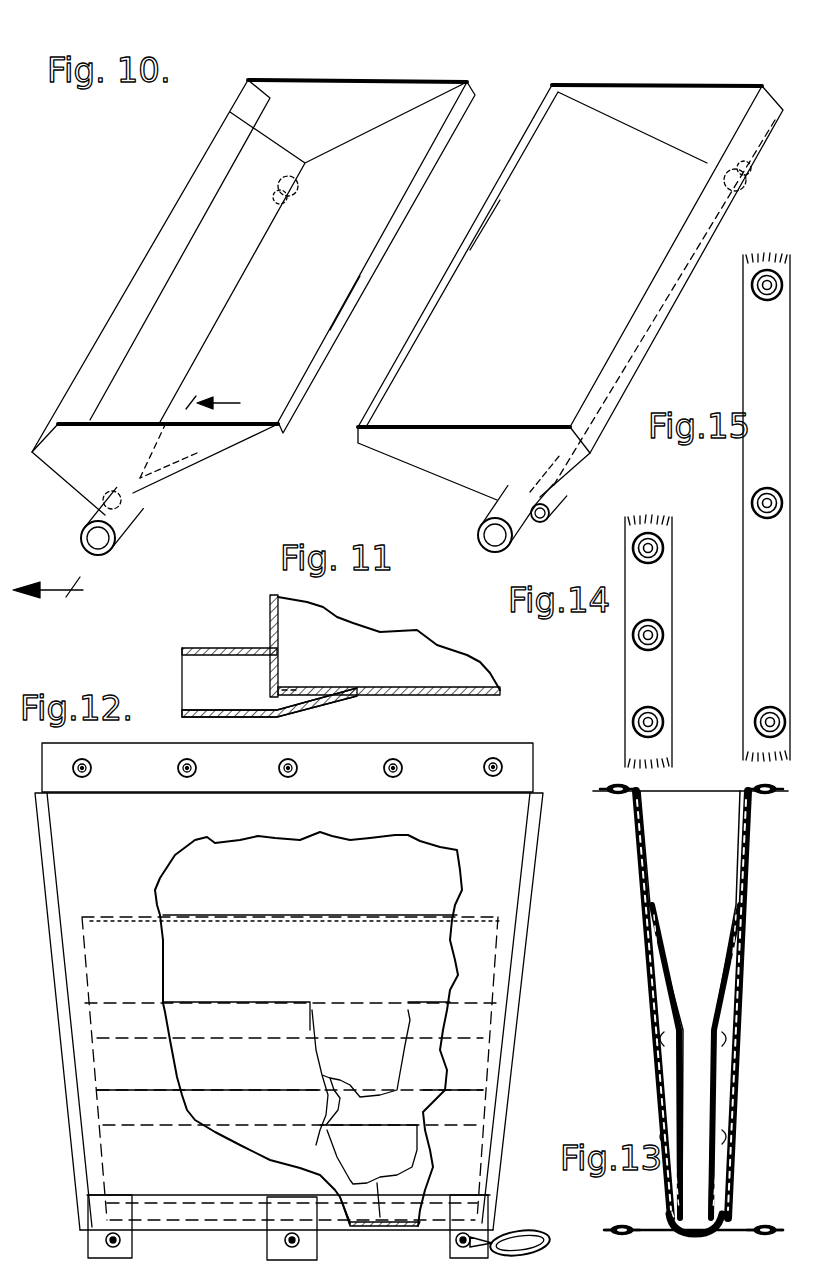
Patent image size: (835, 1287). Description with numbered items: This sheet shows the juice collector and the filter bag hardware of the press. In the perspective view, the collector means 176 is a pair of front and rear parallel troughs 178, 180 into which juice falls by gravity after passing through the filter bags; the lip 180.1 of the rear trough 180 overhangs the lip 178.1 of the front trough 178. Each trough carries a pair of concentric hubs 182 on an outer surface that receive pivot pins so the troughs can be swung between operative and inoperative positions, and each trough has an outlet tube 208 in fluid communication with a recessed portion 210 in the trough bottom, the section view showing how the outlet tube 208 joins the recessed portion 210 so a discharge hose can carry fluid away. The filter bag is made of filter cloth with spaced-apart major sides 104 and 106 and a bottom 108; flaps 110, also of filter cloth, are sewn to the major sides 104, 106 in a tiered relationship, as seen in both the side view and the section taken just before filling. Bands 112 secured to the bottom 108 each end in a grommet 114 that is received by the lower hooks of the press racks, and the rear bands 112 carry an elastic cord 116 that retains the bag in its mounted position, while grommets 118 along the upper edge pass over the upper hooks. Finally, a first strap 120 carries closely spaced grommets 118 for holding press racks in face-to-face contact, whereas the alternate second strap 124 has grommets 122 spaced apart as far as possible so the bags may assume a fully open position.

In FIG. 12, the major side 104 is at (132, 881).
In FIG. 13, the major side 104 is at (749, 868).
In FIG. 12, the major side 106 is at (282, 881).
In FIG. 13, the major side 106 is at (632, 868).
In FIG. 12, the bottom 108 is at (382, 1176).
In FIG. 13, the bottom 108 is at (690, 1236).
In FIG. 12, the flaps 110 is at (332, 1077).
In FIG. 13, the flaps 110 is at (658, 1106).
In FIG. 12, the bands 112 is at (265, 1248).
In FIG. 13, the bands 112 is at (648, 1228).
In FIG. 12, the grommet 114 is at (104, 1243).
In FIG. 13, the grommet 114 is at (620, 1240).
In FIG. 12, the elastic cord 116 is at (545, 1210).
In FIG. 12, the grommets 118 is at (174, 768).
In FIG. 13, the grommets 118 is at (618, 800).
In FIG. 14, the grommets 118 is at (663, 552).
In FIG. 14, the strap 120 is at (625, 670).
In FIG. 15, the grommets 122 is at (785, 284).
In FIG. 15, the second strap 124 is at (745, 366).
In FIG. 10, the collector means 176 is at (613, 64).
In FIG. 10, the front trough 178 is at (708, 80).
In FIG. 10, the lip 178.1 is at (478, 236).
In FIG. 10, the rear trough 180 is at (354, 80).
In FIG. 11, the rear trough 180 is at (356, 627).
In FIG. 10, the lip 180.1 is at (341, 321).
In FIG. 10, the concentric hubs 182 is at (268, 178).
In FIG. 10, the outlet tube 208 is at (128, 527).
In FIG. 11, the outlet tube 208 is at (216, 648).
In FIG. 10, the recessed portion 210 is at (204, 462).
In FIG. 11, the recessed portion 210 is at (291, 688).